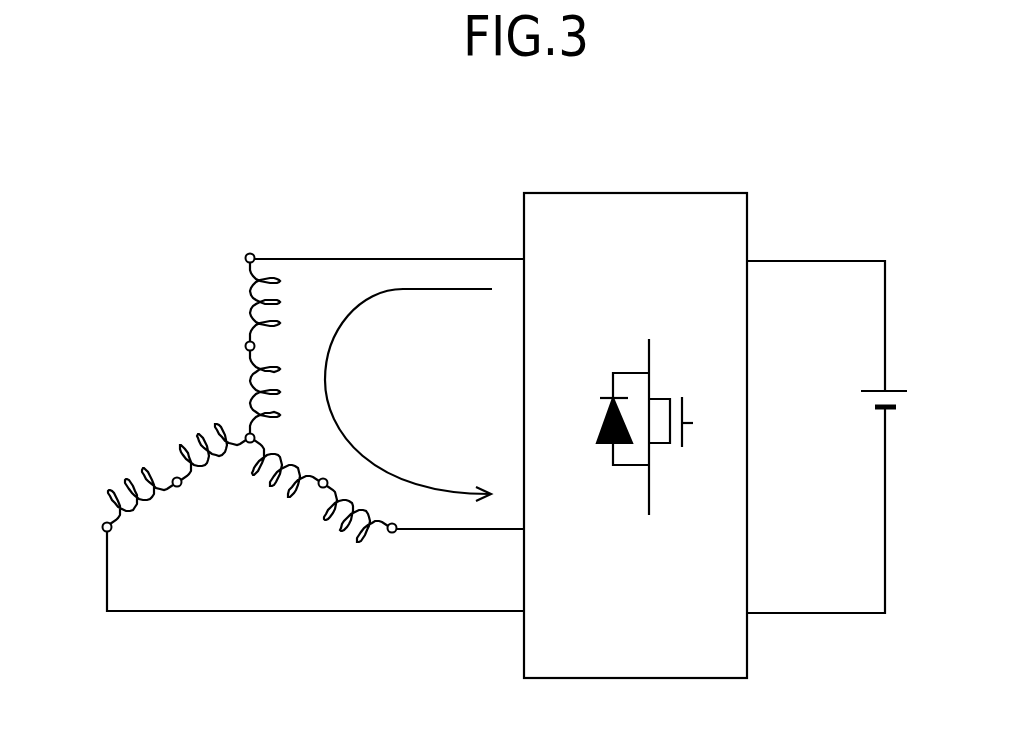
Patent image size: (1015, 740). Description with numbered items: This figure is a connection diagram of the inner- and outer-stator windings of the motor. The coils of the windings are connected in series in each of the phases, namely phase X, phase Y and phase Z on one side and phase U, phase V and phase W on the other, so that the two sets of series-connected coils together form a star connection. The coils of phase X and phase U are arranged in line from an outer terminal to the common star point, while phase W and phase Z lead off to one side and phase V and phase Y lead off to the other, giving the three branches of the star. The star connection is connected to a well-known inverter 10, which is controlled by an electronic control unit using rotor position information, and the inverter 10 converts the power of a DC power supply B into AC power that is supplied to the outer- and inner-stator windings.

The inverter 10 is at (651, 193).
The DC power supply B is at (919, 389).
The X phase X is at (277, 302).
The U phase U is at (277, 392).
The W phase W is at (213, 439).
The Z phase Z is at (140, 484).
The V phase V is at (285, 484).
The Y phase Y is at (356, 527).